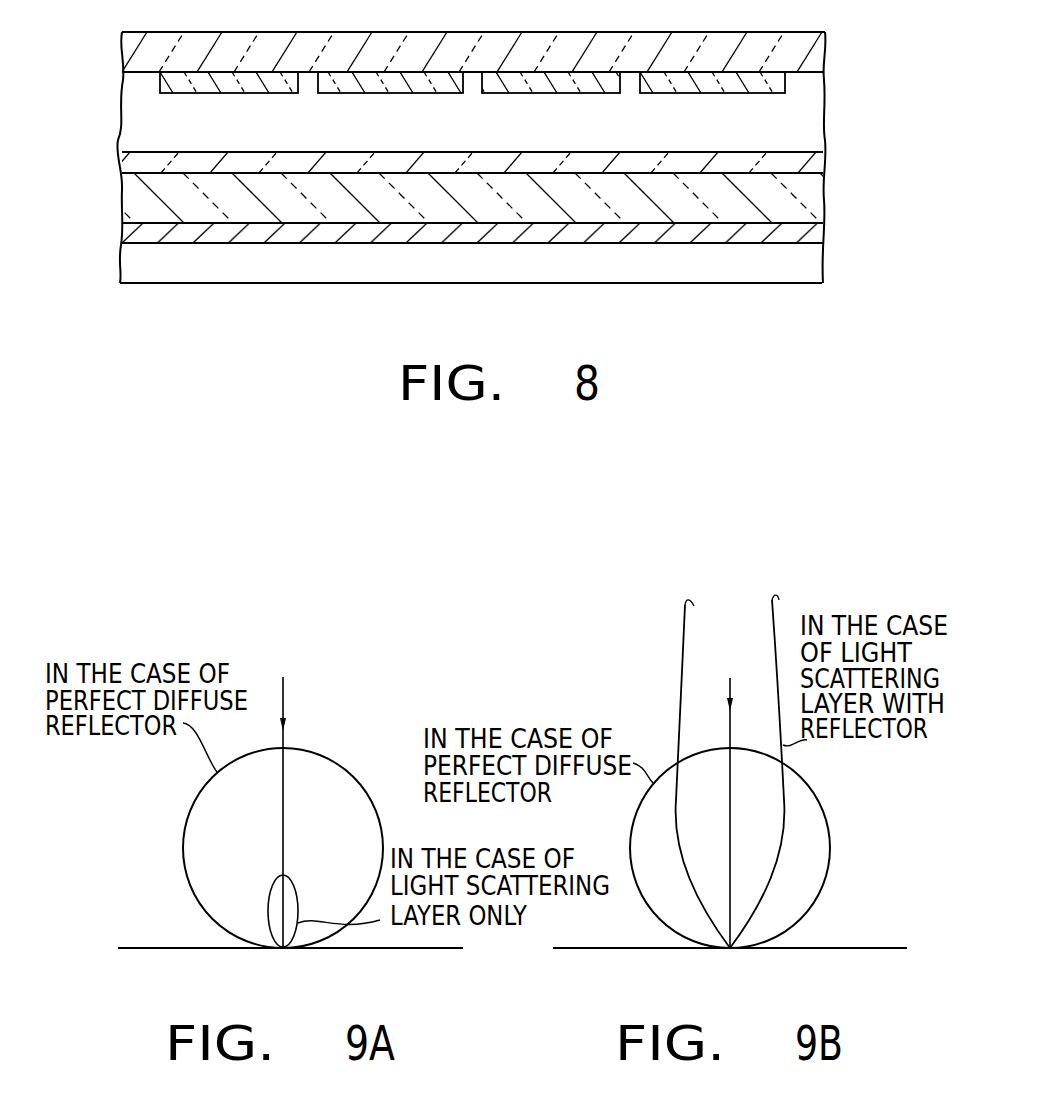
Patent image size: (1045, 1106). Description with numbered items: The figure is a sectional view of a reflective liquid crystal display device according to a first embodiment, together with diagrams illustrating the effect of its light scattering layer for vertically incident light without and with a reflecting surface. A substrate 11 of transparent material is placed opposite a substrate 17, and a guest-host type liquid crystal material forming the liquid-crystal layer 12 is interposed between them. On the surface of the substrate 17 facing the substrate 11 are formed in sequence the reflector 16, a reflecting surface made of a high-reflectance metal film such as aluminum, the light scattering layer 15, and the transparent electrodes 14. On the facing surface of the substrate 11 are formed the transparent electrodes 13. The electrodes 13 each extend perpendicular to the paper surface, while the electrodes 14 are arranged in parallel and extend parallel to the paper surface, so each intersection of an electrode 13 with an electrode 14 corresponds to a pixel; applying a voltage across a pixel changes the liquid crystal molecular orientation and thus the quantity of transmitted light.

The substrate 11 is at (826, 58).
The liquid-crystal layer 12 is at (815, 123).
The electrodes 13 is at (786, 85).
The electrodes 14 is at (813, 163).
The light scattering layer 15 is at (817, 202).
The reflector 16 is at (817, 237).
The substrate 17 is at (817, 273).